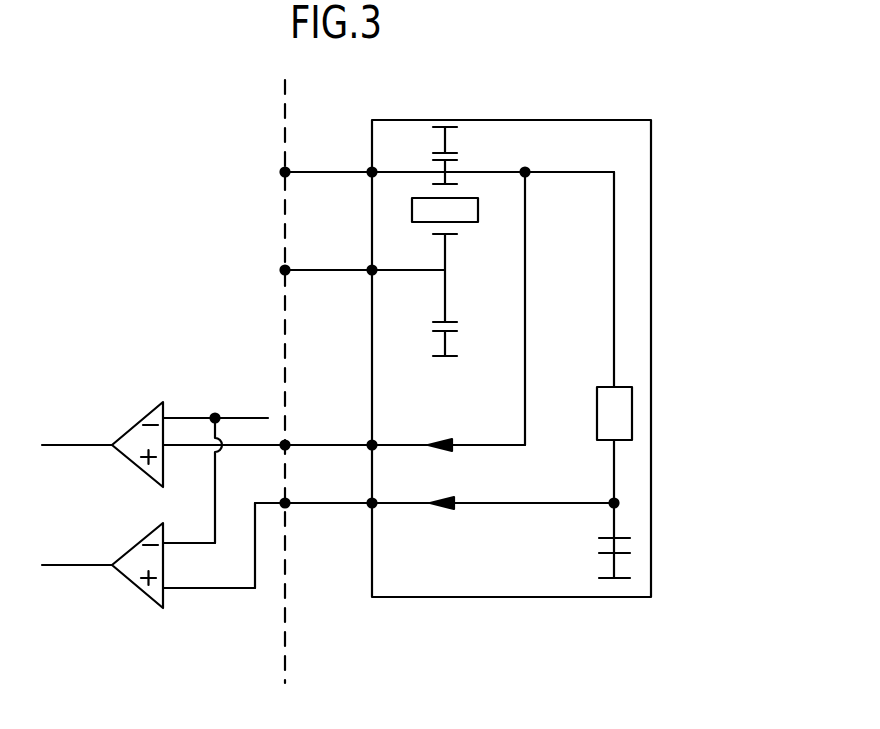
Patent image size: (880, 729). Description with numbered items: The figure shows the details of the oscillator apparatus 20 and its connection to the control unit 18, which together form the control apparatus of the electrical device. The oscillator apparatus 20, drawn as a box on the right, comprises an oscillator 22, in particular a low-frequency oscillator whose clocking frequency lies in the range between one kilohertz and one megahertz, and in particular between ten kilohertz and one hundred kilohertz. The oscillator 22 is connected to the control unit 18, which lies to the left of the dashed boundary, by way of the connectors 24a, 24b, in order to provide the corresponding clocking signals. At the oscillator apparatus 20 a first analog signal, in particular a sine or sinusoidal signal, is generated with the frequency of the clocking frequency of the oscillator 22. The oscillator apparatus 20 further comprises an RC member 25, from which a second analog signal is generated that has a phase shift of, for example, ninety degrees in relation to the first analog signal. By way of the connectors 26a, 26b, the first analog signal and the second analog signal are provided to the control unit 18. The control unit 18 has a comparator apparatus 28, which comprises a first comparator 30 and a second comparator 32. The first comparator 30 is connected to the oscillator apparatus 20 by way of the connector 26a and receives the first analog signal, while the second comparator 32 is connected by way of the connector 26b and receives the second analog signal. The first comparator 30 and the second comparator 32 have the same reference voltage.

The control unit 18 is at (285, 84).
The oscillator apparatus 20 is at (598, 95).
The oscillator 22 is at (497, 145).
The connector 24a is at (370, 170).
The connector 24b is at (370, 272).
The RC member 25 is at (625, 464).
The connector 26a is at (370, 443).
The connector 26b is at (370, 506).
The comparator apparatus 28 is at (163, 510).
The first comparator 30 is at (153, 411).
The second comparator 32 is at (180, 613).